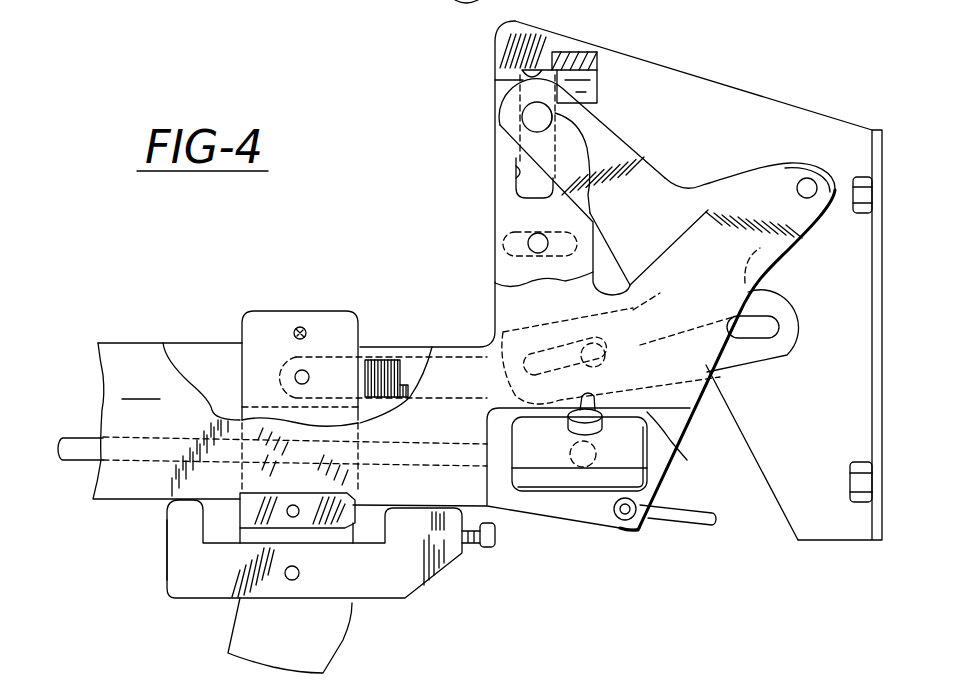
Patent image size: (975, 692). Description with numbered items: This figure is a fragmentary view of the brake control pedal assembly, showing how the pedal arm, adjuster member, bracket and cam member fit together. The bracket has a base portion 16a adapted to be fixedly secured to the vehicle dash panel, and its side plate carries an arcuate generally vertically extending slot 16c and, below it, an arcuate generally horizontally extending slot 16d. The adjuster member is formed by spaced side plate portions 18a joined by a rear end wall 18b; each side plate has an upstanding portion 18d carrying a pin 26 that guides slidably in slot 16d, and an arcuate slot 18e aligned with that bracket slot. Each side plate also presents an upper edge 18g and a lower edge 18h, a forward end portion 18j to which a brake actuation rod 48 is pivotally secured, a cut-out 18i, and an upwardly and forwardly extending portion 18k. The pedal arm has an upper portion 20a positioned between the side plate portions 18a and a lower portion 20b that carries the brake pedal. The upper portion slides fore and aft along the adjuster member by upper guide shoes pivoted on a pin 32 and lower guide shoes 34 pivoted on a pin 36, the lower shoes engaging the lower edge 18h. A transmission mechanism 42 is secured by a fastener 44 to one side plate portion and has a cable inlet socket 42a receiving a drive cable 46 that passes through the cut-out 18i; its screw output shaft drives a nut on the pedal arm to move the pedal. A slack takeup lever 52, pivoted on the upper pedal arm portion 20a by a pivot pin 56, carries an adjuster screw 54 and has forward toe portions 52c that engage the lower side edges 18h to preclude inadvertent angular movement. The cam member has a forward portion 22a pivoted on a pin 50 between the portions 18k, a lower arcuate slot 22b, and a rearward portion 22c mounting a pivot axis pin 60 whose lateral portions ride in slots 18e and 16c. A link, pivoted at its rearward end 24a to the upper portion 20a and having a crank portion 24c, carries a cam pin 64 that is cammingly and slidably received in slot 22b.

The base portion 16a is at (872, 145).
The arcuate generally vertically extending slot 16c is at (520, 70).
The arcuate generally horizontally extending slot 16d is at (530, 228).
The side plate portions 18a is at (167, 421).
The rear end wall 18b is at (648, 60).
The upstanding portion 18d is at (630, 50).
The arcuate slot 18e is at (516, 168).
The upper edge 18g is at (410, 348).
The lower edge 18h is at (117, 500).
The cut-out 18i is at (677, 408).
The forward end portion 18j is at (568, 512).
The upwardly and forwardly extending portion 18k is at (778, 250).
The upper portion 20a is at (240, 366).
The lower portion 20b is at (340, 660).
The upwardly extending forward portion 22a is at (728, 180).
The lower arcuate slot 22b is at (750, 340).
The upwardly extending rearward portion 22c is at (625, 133).
The rearward end 24a is at (378, 350).
The crank portion 24c is at (392, 388).
The pin 26 is at (537, 232).
The pin 32 is at (300, 328).
The lower guide shoes 34 is at (250, 513).
The pin 36 is at (293, 506).
The transmission mechanism 42 is at (533, 477).
The cable inlet socket 42a is at (622, 442).
The fastener 44 is at (597, 445).
The drive cable 46 is at (602, 395).
The brake actuation rod 48 is at (690, 522).
The pin 50 is at (807, 178).
The lever 52 is at (418, 605).
The forward toe portions 52c is at (160, 527).
The adjuster screw 54 is at (487, 547).
The pivot pin 56 is at (292, 580).
The pivot axis pin 60 is at (590, 182).
The cam pin 64 is at (647, 312).